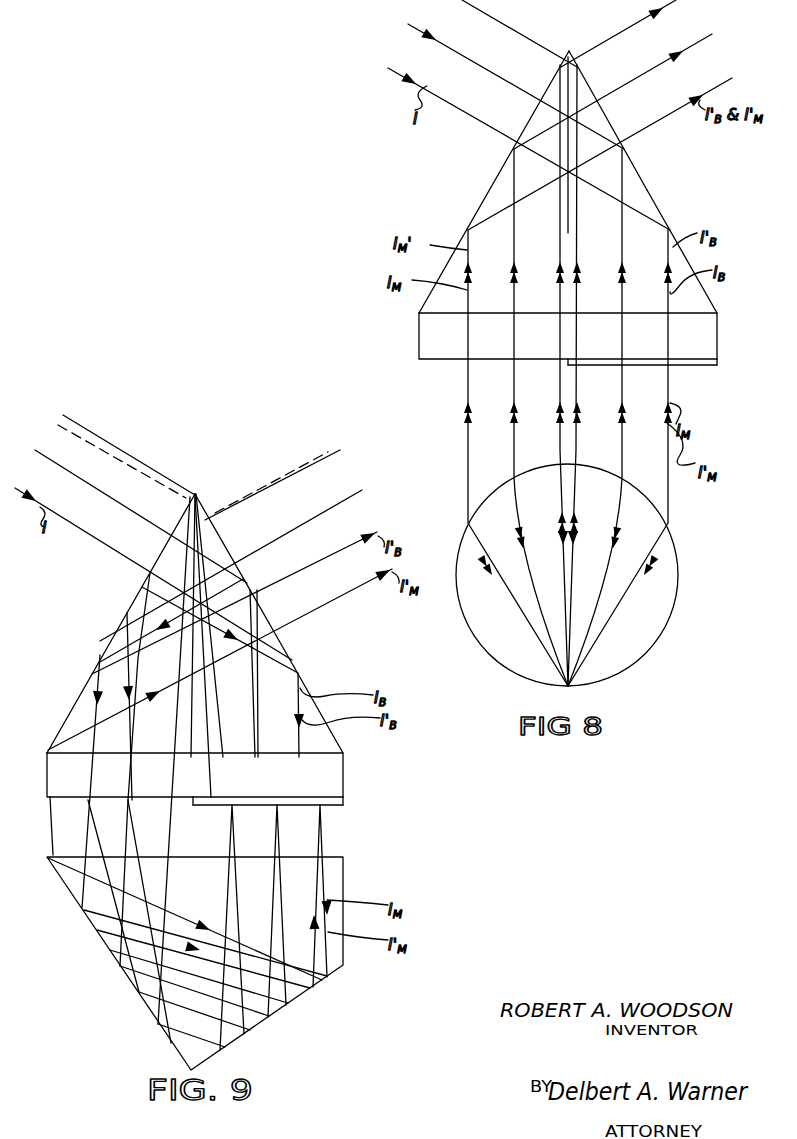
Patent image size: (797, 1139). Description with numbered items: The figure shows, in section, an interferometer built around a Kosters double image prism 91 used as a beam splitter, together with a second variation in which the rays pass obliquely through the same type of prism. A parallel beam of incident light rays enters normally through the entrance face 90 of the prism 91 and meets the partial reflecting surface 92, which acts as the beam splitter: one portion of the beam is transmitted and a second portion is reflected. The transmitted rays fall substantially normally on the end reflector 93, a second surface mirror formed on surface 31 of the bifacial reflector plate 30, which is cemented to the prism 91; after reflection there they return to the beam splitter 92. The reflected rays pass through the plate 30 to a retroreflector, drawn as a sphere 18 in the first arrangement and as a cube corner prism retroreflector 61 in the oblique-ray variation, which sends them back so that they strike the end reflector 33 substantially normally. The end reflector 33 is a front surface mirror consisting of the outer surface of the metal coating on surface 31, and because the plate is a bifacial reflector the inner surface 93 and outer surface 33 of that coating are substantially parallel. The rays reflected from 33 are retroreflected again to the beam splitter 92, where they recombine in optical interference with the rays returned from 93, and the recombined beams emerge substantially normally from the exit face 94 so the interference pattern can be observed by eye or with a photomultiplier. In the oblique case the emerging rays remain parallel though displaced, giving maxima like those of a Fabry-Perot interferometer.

In FIG. 8, the spherical lens / ball 18 is at (677, 557).
In FIG. 8, the bifacial reflector plate 30 is at (702, 330).
In FIG. 9, the bifacial reflector plate 30 is at (330, 775).
In FIG. 8, the surface of bifacial reflector plate 31 is at (442, 362).
In FIG. 9, the surface of bifacial reflector plate 31 is at (63, 800).
In FIG. 8, the end reflector 33 is at (700, 367).
In FIG. 9, the end reflector 33 is at (332, 807).
In FIG. 9, the retroreflector 61 is at (335, 875).
In FIG. 8, the entrance face 90 is at (489, 195).
In FIG. 9, the entrance face 90 is at (110, 643).
In FIG. 8, the Kosters double image prism 91 is at (688, 307).
In FIG. 9, the Kosters double image prism 91 is at (330, 748).
In FIG. 8, the partial reflecting surface 92 is at (568, 230).
In FIG. 9, the partial reflecting surface 92 is at (279, 641).
In FIG. 8, the end reflector 93 is at (690, 358).
In FIG. 9, the end reflector 93 is at (330, 797).
In FIG. 8, the exit face 94 is at (630, 160).
In FIG. 9, the exit face 94 is at (297, 660).